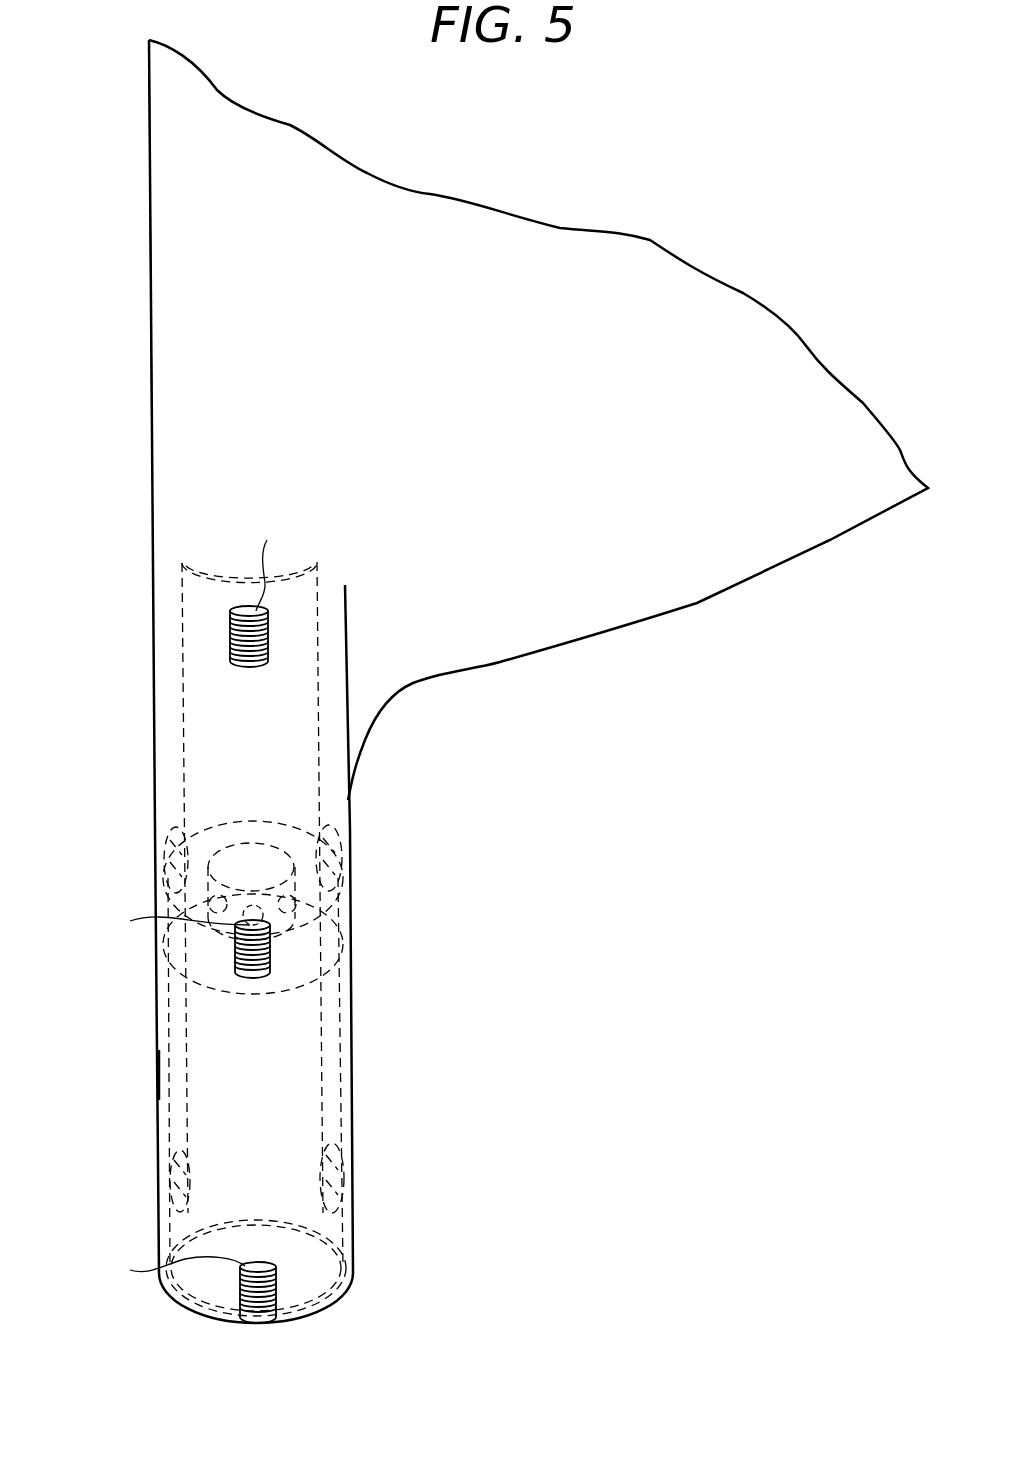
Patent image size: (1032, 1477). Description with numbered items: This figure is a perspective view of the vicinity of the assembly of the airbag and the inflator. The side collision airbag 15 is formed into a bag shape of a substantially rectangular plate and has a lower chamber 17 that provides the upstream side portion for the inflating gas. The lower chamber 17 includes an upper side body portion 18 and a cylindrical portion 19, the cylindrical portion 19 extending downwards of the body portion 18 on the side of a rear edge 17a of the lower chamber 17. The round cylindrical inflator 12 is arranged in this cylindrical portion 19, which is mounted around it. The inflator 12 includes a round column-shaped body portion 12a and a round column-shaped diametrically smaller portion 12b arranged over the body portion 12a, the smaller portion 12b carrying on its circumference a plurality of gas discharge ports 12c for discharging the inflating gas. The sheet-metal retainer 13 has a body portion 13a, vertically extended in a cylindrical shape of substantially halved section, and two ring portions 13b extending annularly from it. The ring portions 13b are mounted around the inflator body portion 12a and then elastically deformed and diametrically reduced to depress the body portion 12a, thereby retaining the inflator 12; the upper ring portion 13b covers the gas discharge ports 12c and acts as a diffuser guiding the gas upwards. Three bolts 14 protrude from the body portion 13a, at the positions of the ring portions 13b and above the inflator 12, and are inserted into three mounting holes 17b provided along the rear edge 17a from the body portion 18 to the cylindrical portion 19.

The inflator 12 is at (347, 1008).
The body portion 12a is at (340, 1082).
The diametrically smaller portion 12b is at (258, 860).
The gas discharge ports 12c is at (285, 900).
The retainer 13 is at (181, 704).
The body portion 13a is at (293, 627).
The ring portions 13b is at (172, 890).
The bolts 14 is at (252, 664).
The side collision airbag 15 is at (133, 273).
The lower chamber 17 is at (812, 578).
The rear edge 17a is at (150, 452).
The mounting holes 17b is at (192, 895).
The body portion 18 is at (680, 583).
The cylindrical portion 19 is at (163, 1080).